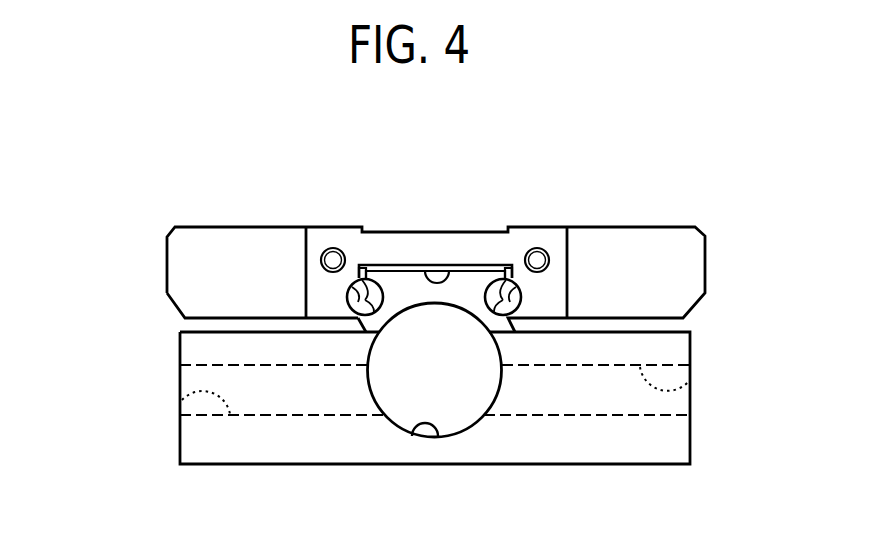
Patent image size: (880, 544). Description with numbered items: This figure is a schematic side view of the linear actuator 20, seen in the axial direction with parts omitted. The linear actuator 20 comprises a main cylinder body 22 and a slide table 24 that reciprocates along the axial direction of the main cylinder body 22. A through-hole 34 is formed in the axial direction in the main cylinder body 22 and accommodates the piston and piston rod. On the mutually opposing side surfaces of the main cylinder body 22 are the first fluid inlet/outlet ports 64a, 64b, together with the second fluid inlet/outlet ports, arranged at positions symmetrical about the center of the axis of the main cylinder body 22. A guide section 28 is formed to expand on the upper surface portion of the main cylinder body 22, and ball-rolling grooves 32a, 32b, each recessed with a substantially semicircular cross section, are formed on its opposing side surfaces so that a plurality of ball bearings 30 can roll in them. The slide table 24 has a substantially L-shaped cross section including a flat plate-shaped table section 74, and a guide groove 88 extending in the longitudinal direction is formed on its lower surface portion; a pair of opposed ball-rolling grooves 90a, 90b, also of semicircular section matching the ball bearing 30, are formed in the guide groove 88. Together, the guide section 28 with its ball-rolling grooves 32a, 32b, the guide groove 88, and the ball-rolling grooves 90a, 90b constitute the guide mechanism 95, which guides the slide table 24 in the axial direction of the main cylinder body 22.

The linear actuator 20 is at (671, 116).
The main cylinder body 22 is at (434, 431).
The slide table 24 is at (436, 247).
The guide section 28 is at (403, 287).
The ball bearings 30 is at (435, 321).
The ball-rolling groove 32a is at (372, 277).
The ball-rolling groove 32b is at (513, 277).
The through-hole 34 is at (442, 438).
The first fluid inlet/outlet port 64a is at (180, 401).
The first fluid inlet/outlet port 64b is at (697, 377).
The table section 74 is at (225, 246).
The guide groove 88 is at (453, 264).
The ball-rolling groove 90a is at (344, 308).
The ball-rolling groove 90b is at (524, 308).
The guide mechanism 95 is at (466, 216).